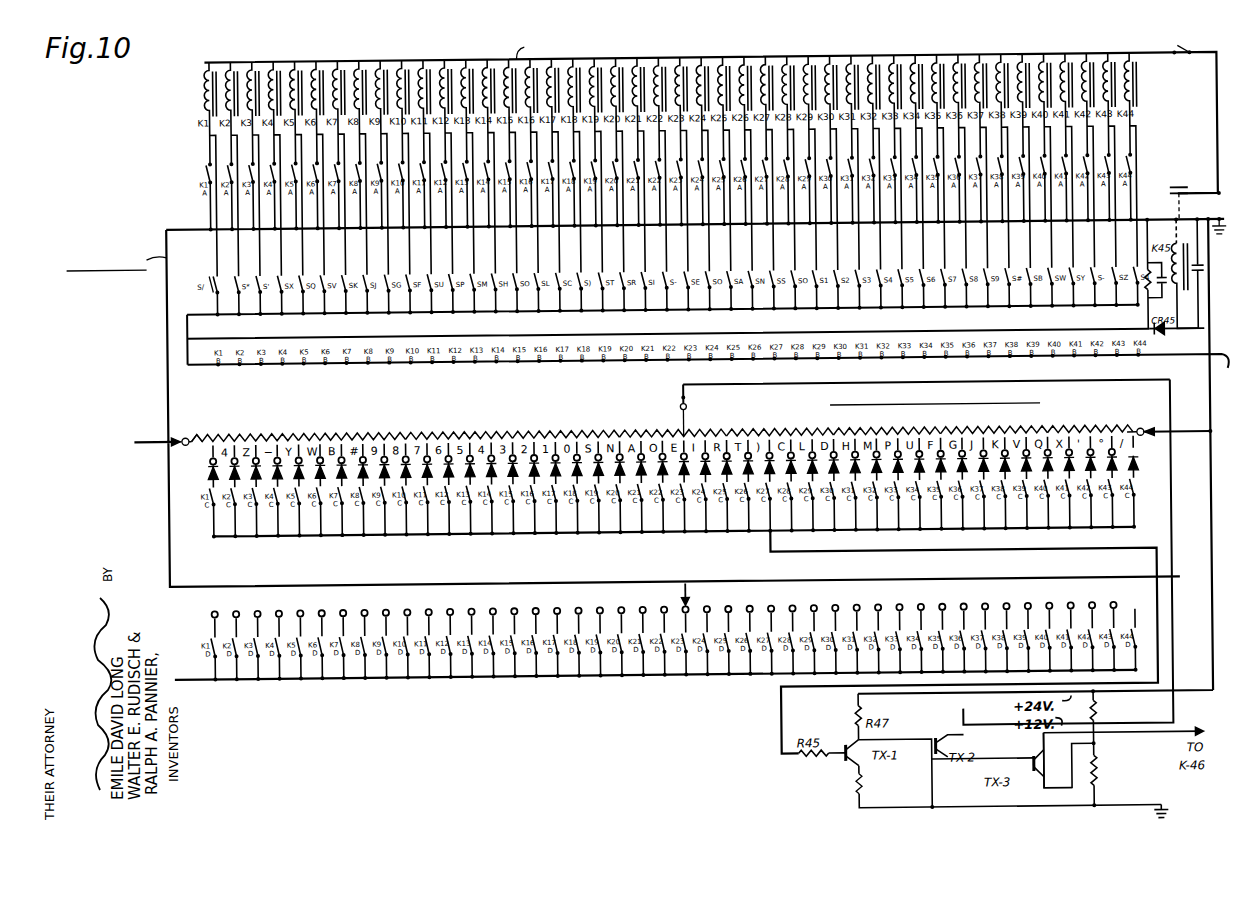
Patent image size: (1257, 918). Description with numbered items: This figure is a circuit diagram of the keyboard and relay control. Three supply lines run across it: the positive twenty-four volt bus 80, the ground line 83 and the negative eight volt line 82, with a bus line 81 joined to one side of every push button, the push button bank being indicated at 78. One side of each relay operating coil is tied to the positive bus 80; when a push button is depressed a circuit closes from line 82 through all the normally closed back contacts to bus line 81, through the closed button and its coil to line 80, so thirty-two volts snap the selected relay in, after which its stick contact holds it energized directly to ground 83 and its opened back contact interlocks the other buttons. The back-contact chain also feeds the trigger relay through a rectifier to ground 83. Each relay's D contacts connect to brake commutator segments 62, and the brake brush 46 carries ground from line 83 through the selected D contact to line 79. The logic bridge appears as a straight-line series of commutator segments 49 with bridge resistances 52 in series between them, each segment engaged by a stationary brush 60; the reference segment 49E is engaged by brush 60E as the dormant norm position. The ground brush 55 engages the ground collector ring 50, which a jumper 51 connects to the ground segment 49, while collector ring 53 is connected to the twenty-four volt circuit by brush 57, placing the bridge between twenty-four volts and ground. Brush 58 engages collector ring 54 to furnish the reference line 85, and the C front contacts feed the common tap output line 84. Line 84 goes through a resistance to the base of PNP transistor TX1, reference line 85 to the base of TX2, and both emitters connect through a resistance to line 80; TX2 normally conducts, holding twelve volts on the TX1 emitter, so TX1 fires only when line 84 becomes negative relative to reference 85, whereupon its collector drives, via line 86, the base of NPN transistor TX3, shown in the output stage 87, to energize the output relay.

The brake brush 46 is at (688, 596).
The commutator segment 49 is at (209, 457).
The commutator segment E 49E is at (680, 454).
The ground collector ring 50 is at (188, 433).
The jumper 51 is at (208, 436).
The resistor chain 52 is at (248, 436).
The collector ring 53 is at (1150, 437).
The collector ring 54 is at (688, 407).
The ground brush 55 is at (186, 433).
The brush 57 is at (1152, 439).
The brush 58 is at (683, 398).
The stationary brush 60 is at (230, 470).
The brush E 60E is at (687, 466).
The brake commutator segment 62 is at (230, 610).
The selector switch 78 is at (206, 278).
The line 79 is at (172, 675).
The positive voltage bus 80 is at (208, 58).
The bus line 81 is at (188, 350).
The negative eight volt line 82 is at (1160, 364).
The ground line 83 is at (168, 225).
The common tap output line 84 is at (212, 532).
The reference line 85 is at (1188, 362).
The line 86 is at (876, 778).
The transistor TX-3 87 is at (1040, 744).